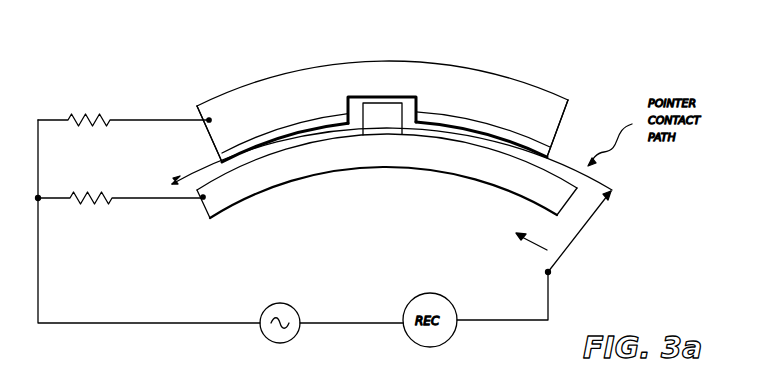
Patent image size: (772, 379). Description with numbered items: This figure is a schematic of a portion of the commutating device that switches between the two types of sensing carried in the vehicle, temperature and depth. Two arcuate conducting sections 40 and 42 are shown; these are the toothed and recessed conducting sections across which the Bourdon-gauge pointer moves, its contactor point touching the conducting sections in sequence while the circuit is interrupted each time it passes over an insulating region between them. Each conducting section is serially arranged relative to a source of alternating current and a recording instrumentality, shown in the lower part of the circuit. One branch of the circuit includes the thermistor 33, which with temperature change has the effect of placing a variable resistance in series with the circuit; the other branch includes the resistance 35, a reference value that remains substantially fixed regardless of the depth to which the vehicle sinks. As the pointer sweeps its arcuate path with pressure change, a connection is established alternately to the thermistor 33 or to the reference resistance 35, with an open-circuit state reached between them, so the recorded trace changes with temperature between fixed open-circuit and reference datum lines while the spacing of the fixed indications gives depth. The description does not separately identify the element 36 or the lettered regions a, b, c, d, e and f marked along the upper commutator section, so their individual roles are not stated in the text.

The upper arcuate resistance segment 36 is at (407, 34).
The conducting section 42 is at (222, 107).
The thermistor 33 is at (103, 138).
The resistance 35 is at (100, 224).
The conducting section 40 is at (267, 182).
The segment end portion a is at (572, 123).
The segment portion b is at (473, 95).
The contact boss portion c is at (408, 103).
The contact tab d is at (385, 122).
The segment portion e is at (355, 103).
The segment portion f is at (300, 93).